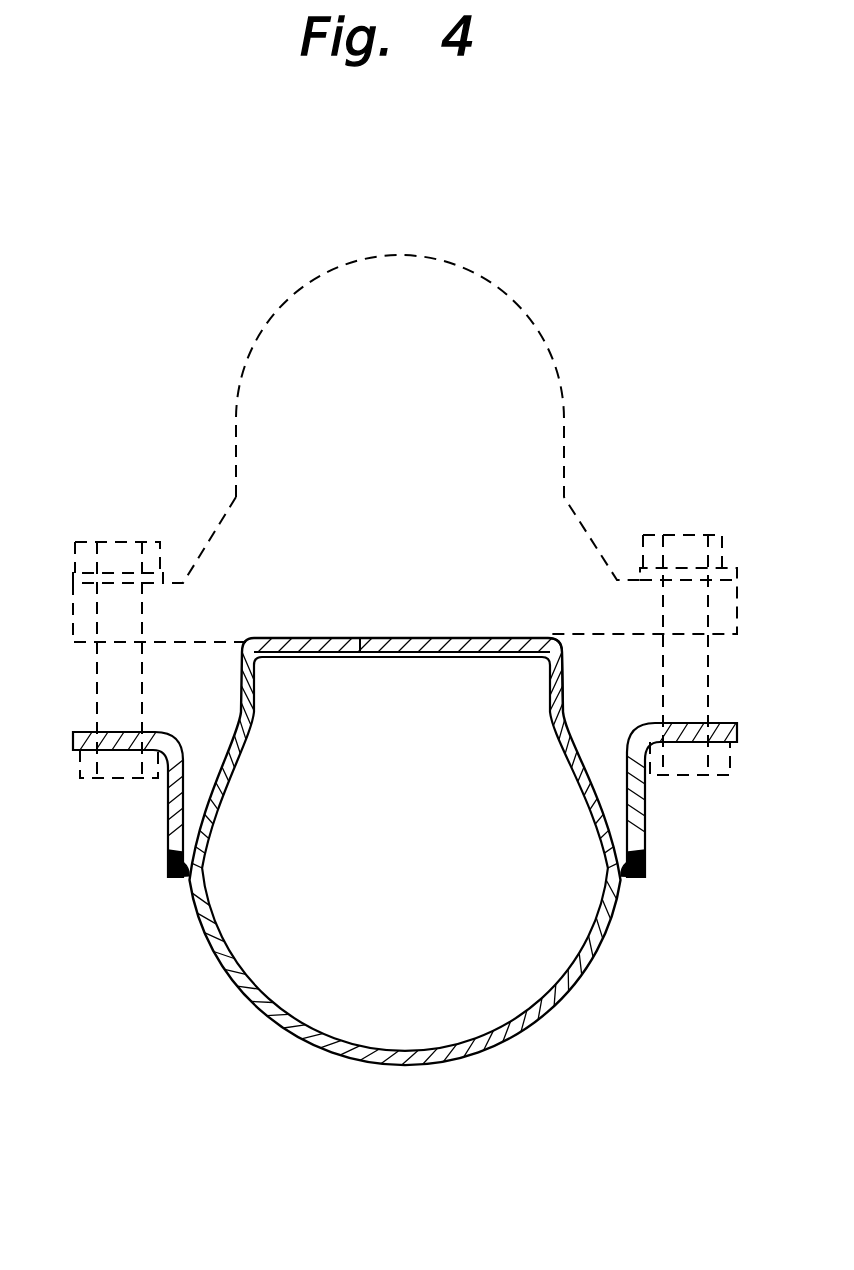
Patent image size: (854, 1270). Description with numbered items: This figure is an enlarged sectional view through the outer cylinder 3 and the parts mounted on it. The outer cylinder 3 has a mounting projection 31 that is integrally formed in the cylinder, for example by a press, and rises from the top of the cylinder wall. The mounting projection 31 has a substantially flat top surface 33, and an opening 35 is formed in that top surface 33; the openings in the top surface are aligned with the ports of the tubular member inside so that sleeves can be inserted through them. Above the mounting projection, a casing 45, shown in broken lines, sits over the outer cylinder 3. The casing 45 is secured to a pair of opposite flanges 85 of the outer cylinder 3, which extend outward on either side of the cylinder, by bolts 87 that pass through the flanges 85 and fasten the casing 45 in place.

The outer cylinder 3 is at (480, 1052).
The mounting projection 31 is at (560, 664).
The top surface 33 is at (500, 637).
The opening 35 is at (420, 640).
The casing 45 is at (406, 254).
The flanges 85 is at (168, 837).
The bolts 87 is at (132, 540).